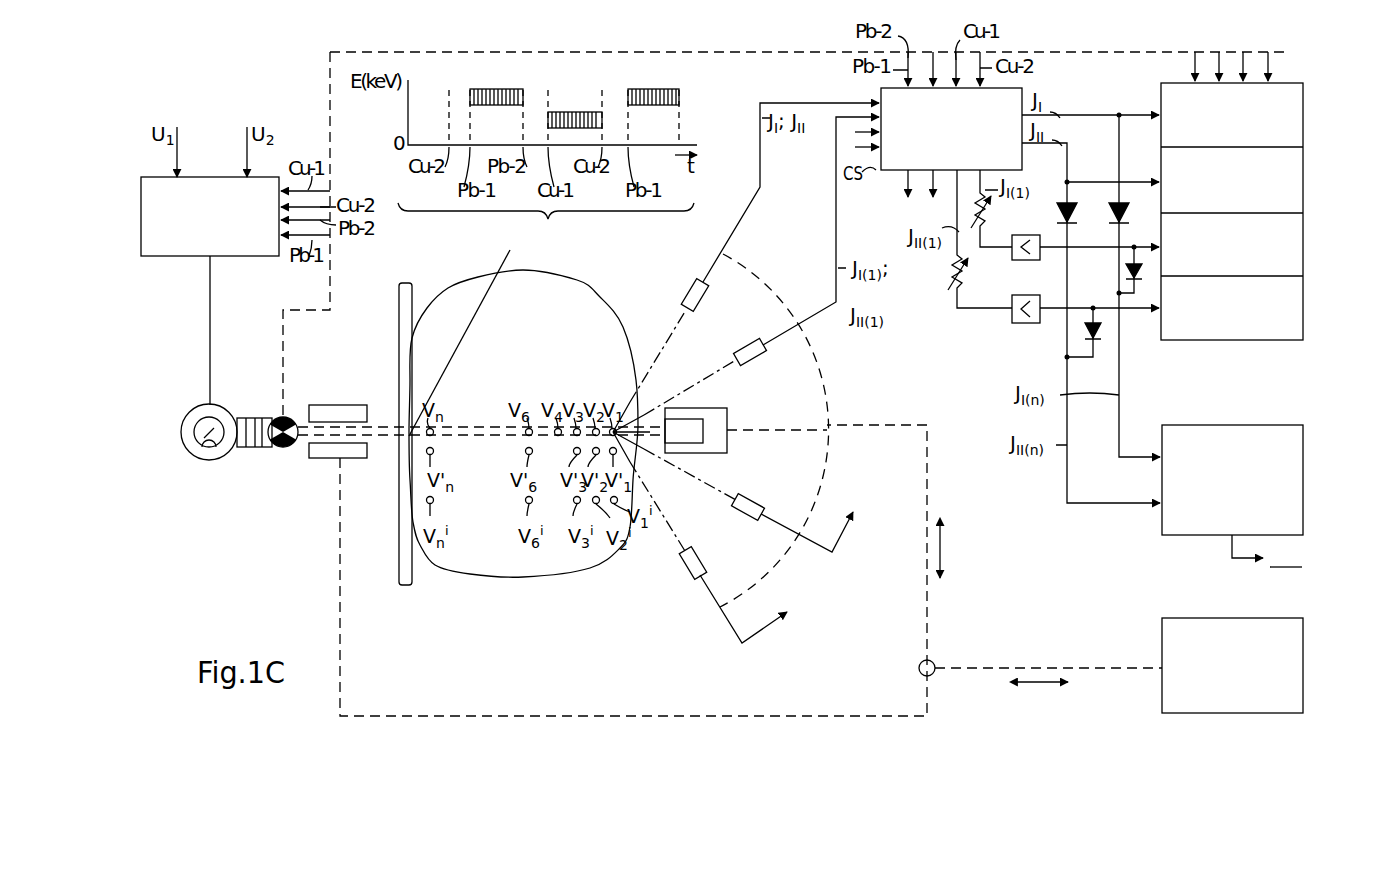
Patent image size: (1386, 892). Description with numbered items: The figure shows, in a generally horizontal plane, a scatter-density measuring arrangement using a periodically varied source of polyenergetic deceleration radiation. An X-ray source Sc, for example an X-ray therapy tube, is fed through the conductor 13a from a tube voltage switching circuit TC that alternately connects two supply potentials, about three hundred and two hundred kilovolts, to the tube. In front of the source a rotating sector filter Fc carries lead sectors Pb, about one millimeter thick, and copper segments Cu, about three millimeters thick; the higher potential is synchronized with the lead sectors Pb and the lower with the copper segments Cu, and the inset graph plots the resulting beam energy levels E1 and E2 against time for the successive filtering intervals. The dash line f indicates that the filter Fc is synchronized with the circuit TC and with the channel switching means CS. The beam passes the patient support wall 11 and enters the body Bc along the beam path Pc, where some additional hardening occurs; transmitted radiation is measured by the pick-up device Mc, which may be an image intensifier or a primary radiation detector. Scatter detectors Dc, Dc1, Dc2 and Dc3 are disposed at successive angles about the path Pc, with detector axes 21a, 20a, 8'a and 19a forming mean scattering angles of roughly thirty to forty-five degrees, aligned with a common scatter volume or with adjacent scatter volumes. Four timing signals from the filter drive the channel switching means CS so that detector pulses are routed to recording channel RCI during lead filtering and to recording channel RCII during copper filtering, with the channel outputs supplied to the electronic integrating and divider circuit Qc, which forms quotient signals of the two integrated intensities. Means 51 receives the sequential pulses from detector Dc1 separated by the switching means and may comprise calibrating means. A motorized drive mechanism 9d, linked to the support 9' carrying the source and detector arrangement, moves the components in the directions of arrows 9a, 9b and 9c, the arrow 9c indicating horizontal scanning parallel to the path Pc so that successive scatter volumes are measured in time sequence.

The tube voltage switching circuit TC is at (174, 258).
The conductor 13a is at (210, 316).
The X-ray source Sc is at (189, 410).
The lead sectors Pb is at (275, 446).
The copper segments Cu is at (282, 448).
The rotating sector filter Fc is at (294, 450).
The synchronization dash line f is at (283, 346).
The patient support wall 11 is at (399, 547).
The body Bc is at (568, 286).
The beam path Pc is at (647, 421).
The transmitted radiation pick-up device Mc is at (703, 428).
The scatter detector Dc is at (707, 296).
The first scatter detector Dc1 is at (760, 360).
The second scatter detector Dc2 is at (752, 518).
The third scatter detector Dc3 is at (689, 575).
The detector axis 21a is at (681, 320).
The detector axis 20a is at (702, 378).
The detector axis 8'a is at (710, 503).
The detector axis 19a is at (673, 543).
The channel switching means CS is at (951, 129).
The pulse receiving means 51 is at (1027, 324).
The recording channel I RCI is at (1160, 84).
The recording channel II RCII is at (1303, 194).
The electronic integrating and divider circuit Qc is at (1225, 425).
The scanning movement arrow 9a is at (930, 664).
The horizontal movement axis arrow 9b is at (946, 551).
The scanning movement arrow 9c is at (1042, 686).
The motorized drive mechanism 9d is at (1162, 694).
The detector support frame 9' is at (943, 696).
The energy level E1 is at (505, 88).
The energy level E2 is at (592, 111).